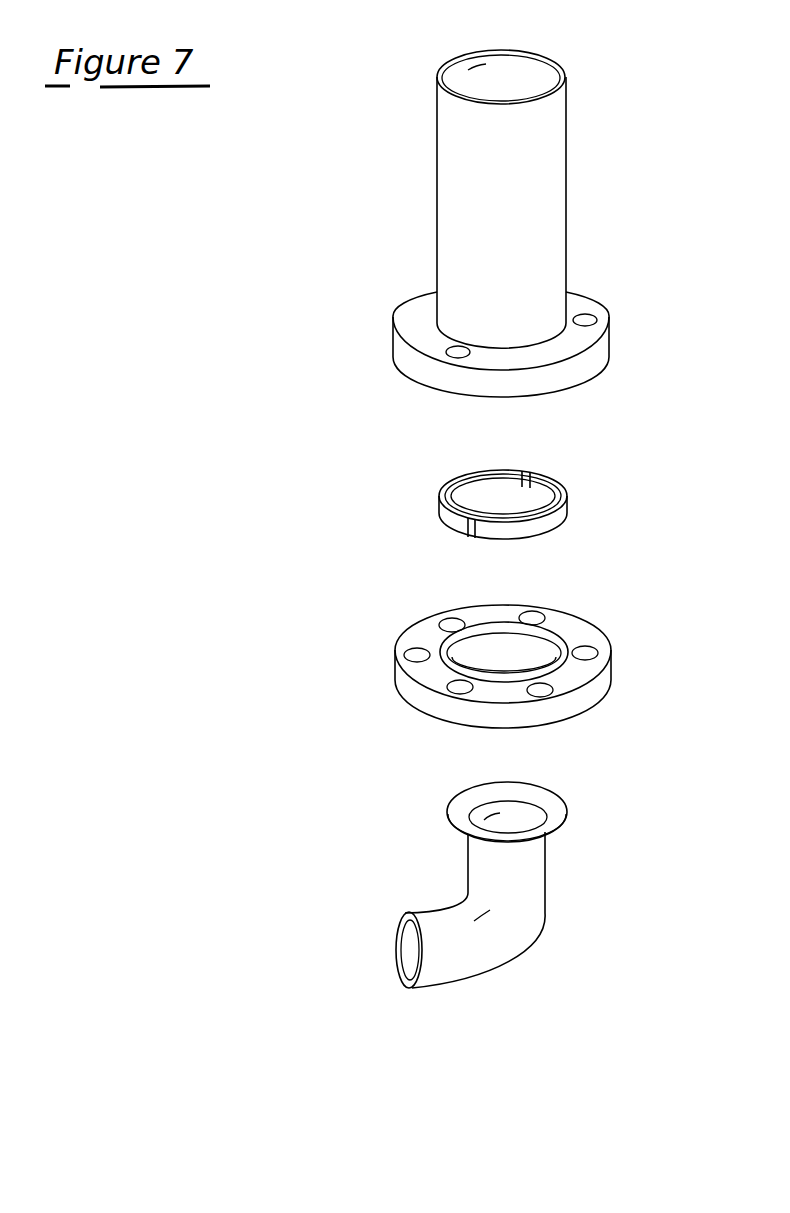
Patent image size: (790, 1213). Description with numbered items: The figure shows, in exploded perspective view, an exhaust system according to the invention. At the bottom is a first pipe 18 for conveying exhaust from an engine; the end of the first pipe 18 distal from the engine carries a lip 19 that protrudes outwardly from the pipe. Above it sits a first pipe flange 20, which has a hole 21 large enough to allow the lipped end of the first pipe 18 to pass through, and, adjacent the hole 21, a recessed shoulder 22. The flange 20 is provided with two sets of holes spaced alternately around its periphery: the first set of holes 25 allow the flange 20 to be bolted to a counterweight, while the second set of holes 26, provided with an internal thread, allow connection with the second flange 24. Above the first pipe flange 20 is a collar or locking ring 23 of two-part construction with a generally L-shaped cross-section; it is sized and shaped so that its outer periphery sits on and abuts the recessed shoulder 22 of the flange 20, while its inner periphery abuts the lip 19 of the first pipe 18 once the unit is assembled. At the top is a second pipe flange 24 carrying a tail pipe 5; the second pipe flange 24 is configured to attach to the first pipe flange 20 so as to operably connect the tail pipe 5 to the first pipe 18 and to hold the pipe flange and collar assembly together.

The tail pipe 5 is at (542, 202).
The second pipe flange 24 is at (412, 320).
The locking ring 23 is at (578, 475).
The first pipe flange 20 is at (574, 626).
The recessed shoulder 22 is at (491, 646).
The hole 21 is at (508, 668).
The first set of holes 25 is at (533, 615).
The second set of holes 26 is at (597, 650).
The lip 19 is at (570, 802).
The first pipe 18 is at (497, 951).